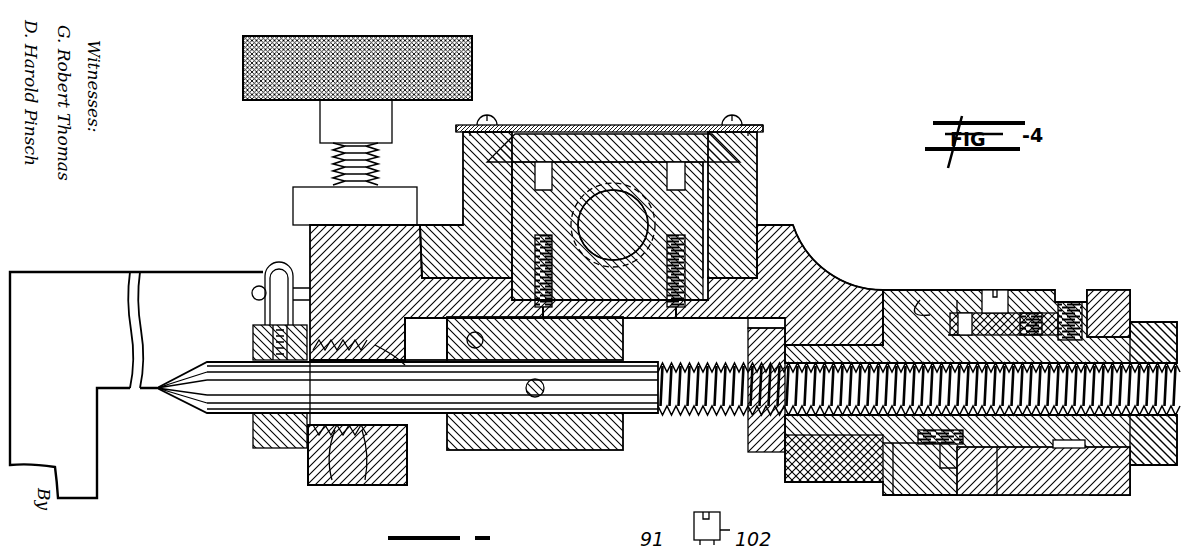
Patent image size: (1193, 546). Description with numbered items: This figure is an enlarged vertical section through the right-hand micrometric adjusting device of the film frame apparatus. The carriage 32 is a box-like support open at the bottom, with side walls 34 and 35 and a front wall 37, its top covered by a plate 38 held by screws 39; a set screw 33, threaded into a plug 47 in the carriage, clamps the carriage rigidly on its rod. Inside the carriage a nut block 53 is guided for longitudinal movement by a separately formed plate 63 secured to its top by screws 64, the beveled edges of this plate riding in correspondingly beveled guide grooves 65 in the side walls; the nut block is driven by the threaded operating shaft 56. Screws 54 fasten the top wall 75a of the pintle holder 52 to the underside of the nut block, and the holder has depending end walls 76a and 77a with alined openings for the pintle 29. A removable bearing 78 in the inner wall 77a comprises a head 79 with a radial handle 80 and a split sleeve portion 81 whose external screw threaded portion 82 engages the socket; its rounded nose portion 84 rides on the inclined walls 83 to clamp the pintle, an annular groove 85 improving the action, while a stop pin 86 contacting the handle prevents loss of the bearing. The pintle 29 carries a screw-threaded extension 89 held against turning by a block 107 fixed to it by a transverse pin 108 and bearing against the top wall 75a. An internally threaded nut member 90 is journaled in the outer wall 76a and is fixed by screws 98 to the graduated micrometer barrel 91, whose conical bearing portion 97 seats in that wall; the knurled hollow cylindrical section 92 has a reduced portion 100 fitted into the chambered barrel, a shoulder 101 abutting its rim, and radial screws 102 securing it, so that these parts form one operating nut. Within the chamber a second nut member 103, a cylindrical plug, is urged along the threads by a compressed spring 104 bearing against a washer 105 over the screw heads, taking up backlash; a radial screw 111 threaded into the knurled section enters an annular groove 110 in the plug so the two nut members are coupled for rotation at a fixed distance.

The pintle 29 is at (180, 398).
The carriage 32 is at (795, 248).
The set screw 33 is at (243, 79).
The side wall 34 is at (466, 190).
The side wall 35 is at (767, 200).
The front wall 37 is at (752, 95).
The plate 38 is at (620, 140).
The screws 39 is at (748, 120).
The plug 47 is at (305, 197).
The pintle holder 52 is at (810, 268).
The nut block 53 is at (717, 187).
The screws 54 is at (687, 242).
The operating shaft 56 is at (600, 195).
The plate 63 is at (517, 123).
The screws 64 is at (553, 127).
The guide grooves 65 is at (463, 146).
The top wall 75a is at (650, 318).
The depending wall 76a is at (808, 470).
The depending wall 77a is at (407, 473).
The removable bearing 78 is at (253, 427).
The head 79 is at (253, 445).
The radial handle 80 is at (275, 311).
The split sleeve portion 81 is at (318, 480).
The external screw threaded portion 82 is at (337, 468).
The inclined walls 83 is at (366, 468).
The rounded nose portion 84 is at (365, 422).
The annular groove 85 is at (312, 447).
The stop pin 86 is at (265, 283).
The screw-threaded extension 89 is at (716, 415).
The nut member 90 is at (790, 460).
The micrometer barrel 91 is at (968, 292).
The hollow cylindrical section 92 is at (1108, 292).
The conical bearing portion 97 is at (893, 470).
The screws 98 is at (940, 470).
The reduced portion 100 is at (1018, 480).
The shoulder 101 is at (1037, 292).
The radial screws 102 is at (992, 292).
The nut member 103 is at (1160, 465).
The spring 104 is at (997, 465).
The washer 105 is at (918, 310).
The block 107 is at (560, 445).
The transverse pin or screw 108 is at (528, 400).
The annular groove 110 is at (1130, 308).
The radial screw 111 is at (1068, 302).